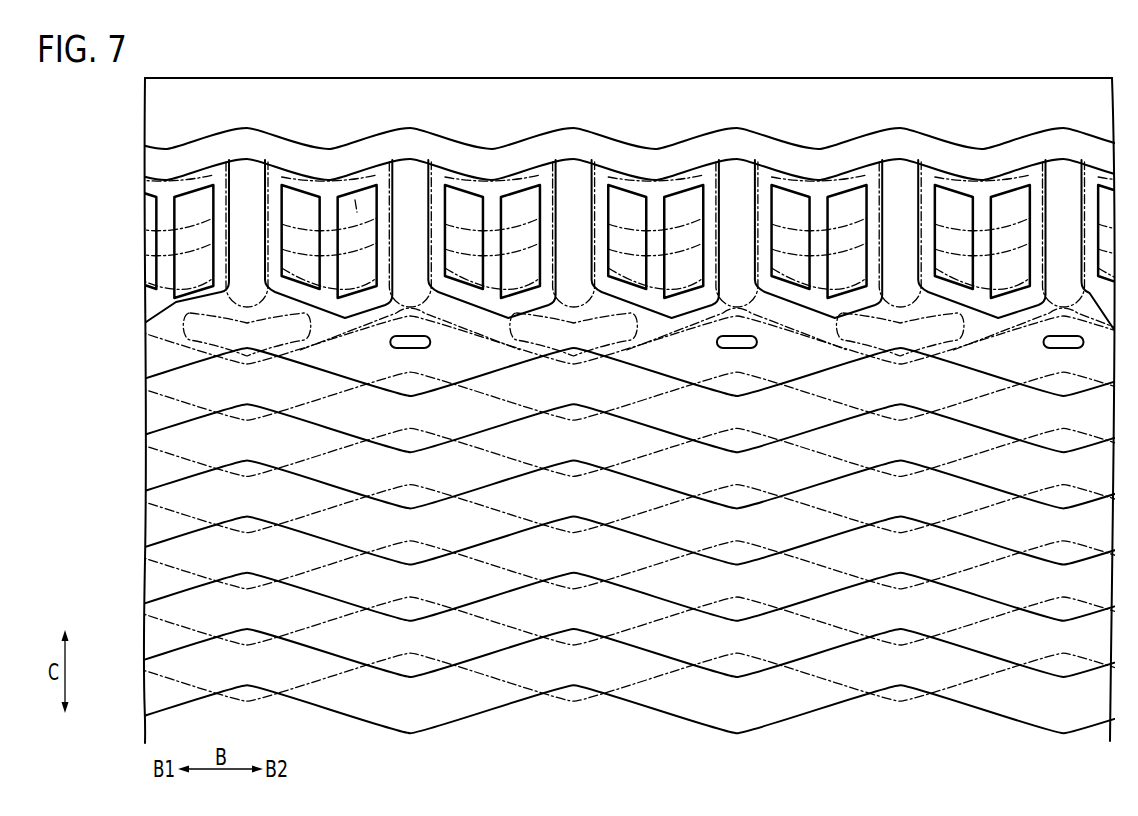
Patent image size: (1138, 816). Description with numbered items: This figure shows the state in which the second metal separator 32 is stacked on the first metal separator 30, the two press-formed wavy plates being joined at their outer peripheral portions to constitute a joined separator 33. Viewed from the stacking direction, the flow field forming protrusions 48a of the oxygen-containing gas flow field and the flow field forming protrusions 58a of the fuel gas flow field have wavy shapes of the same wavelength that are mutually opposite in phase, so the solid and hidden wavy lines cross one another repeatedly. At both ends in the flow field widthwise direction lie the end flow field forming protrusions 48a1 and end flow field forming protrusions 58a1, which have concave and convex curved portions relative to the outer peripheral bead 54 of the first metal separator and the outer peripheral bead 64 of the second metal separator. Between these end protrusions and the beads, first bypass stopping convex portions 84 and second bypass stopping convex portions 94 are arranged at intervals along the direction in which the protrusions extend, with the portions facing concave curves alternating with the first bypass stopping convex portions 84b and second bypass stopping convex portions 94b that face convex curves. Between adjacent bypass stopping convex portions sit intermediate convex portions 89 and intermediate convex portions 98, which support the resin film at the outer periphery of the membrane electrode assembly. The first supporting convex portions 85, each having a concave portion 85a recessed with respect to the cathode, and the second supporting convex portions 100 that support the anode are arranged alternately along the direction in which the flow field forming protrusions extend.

The first metal separator 30 is at (1008, 67).
The second metal separator 32 is at (1046, 67).
The joined separator 33 is at (238, 62).
The flow field forming protrusions 48a is at (611, 540).
The end flow field forming protrusions 48a1 is at (808, 354).
The outer peripheral bead 54 is at (1031, 142).
The flow field forming protrusions 58a is at (611, 508).
The end flow field forming protrusions 58a1 is at (652, 378).
The outer peripheral bead 64 is at (1073, 138).
The first bypass stopping convex portions 84 is at (410, 172).
The first bypass stopping convex portions 84b is at (574, 172).
The first supporting convex portions 85 is at (410, 322).
The concave portions 85a is at (391, 344).
The intermediate convex portions 89 is at (350, 243).
The second bypass stopping convex portions 94 is at (434, 183).
The second bypass stopping convex portions 94b is at (598, 183).
The intermediate convex portions 98 is at (363, 264).
The second supporting convex portions 100 is at (292, 356).